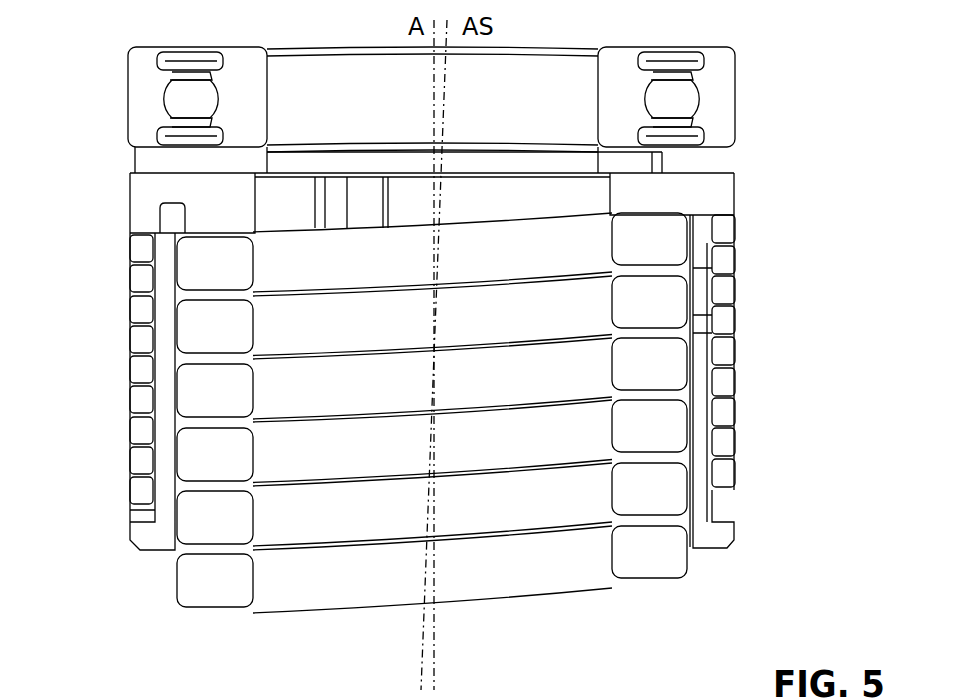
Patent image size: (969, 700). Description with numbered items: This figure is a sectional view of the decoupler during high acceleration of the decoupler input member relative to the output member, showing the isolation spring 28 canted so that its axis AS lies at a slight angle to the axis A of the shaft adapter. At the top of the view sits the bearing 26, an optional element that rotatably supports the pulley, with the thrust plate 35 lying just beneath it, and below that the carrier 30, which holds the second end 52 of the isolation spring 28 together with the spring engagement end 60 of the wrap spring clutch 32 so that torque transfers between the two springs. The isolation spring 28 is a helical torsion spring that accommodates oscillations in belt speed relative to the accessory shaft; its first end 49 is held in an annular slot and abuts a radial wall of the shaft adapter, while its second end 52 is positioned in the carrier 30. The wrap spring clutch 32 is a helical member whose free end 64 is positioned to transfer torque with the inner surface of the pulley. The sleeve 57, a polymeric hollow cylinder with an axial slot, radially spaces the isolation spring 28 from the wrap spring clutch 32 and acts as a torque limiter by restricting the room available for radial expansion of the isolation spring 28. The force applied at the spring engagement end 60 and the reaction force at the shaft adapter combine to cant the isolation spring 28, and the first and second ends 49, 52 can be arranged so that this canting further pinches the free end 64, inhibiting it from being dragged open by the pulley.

The bearing 26 is at (727, 78).
The thrust plate 35 is at (633, 156).
The carrier 30 is at (448, 360).
The spring engagement end 60 is at (173, 215).
The second end 52 is at (461, 413).
The sleeve 57 is at (697, 382).
The wrap spring clutch 32 is at (727, 417).
The isolation spring 28 is at (645, 492).
The free end 64 is at (138, 497).
The first end 49 is at (207, 534).